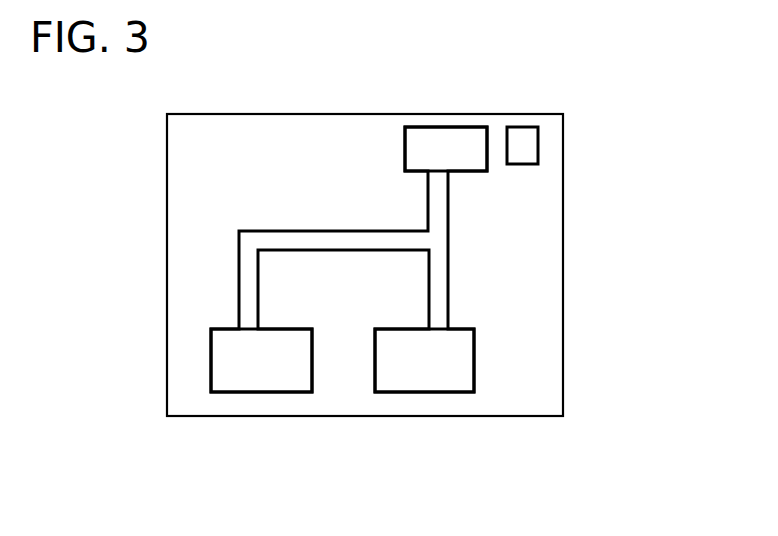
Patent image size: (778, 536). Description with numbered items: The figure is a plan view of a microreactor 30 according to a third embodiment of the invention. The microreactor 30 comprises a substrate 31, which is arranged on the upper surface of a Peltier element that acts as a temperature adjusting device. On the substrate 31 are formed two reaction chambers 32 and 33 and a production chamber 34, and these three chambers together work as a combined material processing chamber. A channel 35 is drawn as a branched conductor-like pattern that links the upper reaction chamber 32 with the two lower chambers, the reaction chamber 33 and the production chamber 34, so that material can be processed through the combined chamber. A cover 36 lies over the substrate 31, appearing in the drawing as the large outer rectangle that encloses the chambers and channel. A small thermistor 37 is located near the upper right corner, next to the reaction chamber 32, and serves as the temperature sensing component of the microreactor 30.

The microreactor 30 is at (637, 268).
The substrate 31 is at (563, 360).
The reaction chamber 32 is at (447, 127).
The reaction chamber 33 is at (428, 392).
The production chamber 34 is at (263, 392).
The channel 35 is at (312, 231).
The cover 36 is at (538, 307).
The thermistor 37 is at (538, 143).